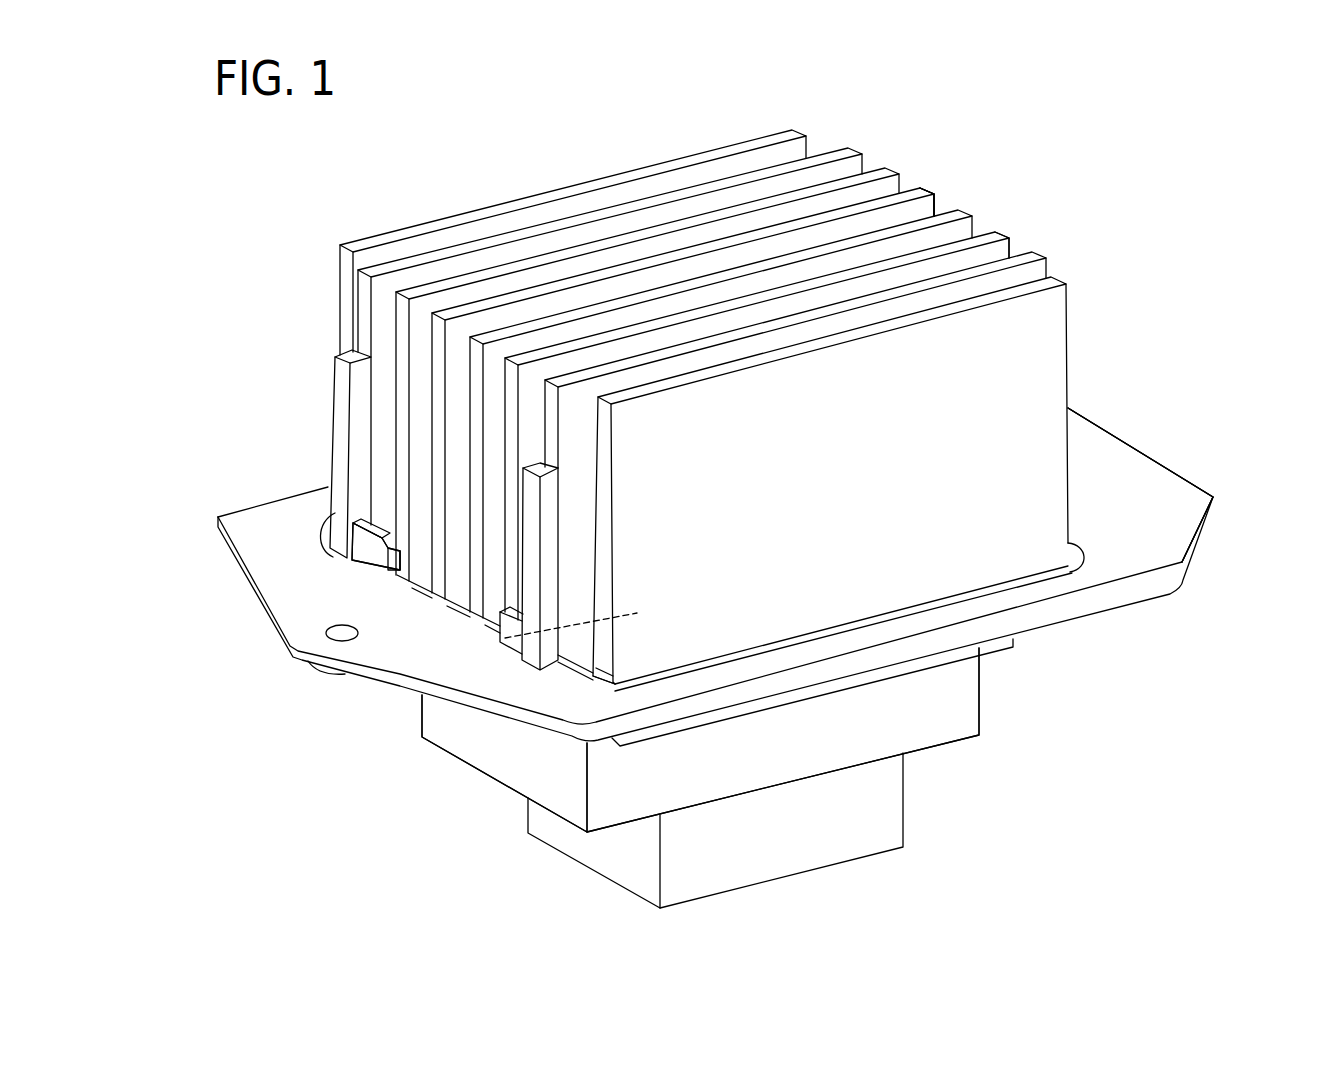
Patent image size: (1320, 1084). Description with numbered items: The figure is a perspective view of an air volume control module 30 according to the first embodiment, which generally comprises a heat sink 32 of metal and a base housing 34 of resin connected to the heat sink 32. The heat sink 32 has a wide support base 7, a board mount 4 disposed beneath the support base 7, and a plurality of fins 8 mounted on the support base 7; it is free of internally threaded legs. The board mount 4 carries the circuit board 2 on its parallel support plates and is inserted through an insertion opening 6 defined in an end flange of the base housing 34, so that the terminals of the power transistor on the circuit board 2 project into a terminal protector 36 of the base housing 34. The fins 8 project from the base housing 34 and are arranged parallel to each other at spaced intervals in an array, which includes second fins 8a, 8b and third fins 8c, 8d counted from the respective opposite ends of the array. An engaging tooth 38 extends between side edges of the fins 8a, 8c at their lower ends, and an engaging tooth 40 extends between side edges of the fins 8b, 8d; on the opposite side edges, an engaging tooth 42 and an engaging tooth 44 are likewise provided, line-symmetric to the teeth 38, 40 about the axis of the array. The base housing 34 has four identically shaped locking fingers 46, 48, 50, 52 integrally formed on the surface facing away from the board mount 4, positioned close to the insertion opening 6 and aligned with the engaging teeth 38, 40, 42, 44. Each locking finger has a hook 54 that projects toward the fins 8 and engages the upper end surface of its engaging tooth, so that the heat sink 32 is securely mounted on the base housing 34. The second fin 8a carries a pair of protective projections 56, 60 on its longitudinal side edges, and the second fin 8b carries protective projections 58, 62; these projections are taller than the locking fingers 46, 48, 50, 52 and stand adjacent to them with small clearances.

The air volume control module 30 is at (304, 163).
The fins 8 is at (725, 354).
The second fin 8a is at (847, 148).
The second fin 8b is at (1037, 253).
The third fin 8c is at (887, 167).
The third fin 8d is at (995, 232).
The protective projection 60 is at (910, 183).
The protective projection 62 is at (1013, 253).
The locking finger 50 is at (935, 192).
The engaging tooth 42 is at (927, 202).
The locking finger 52 is at (1071, 447).
The engaging tooth 44 is at (1140, 485).
The heat sink 32 is at (1056, 384).
The base housing 34 is at (1168, 535).
The terminal protector 36 is at (788, 857).
The board mount 4 is at (928, 722).
The circuit board 2 is at (700, 740).
The insertion opening 6 is at (1038, 562).
The support base 7 is at (586, 662).
The engaging tooth 40 is at (588, 618).
The locking finger 46 is at (367, 550).
The engaging tooth 38 is at (395, 565).
The locking finger 48 is at (510, 647).
The hook 54 is at (372, 554).
The protective projection 56 is at (343, 393).
The protective projection 58 is at (540, 468).